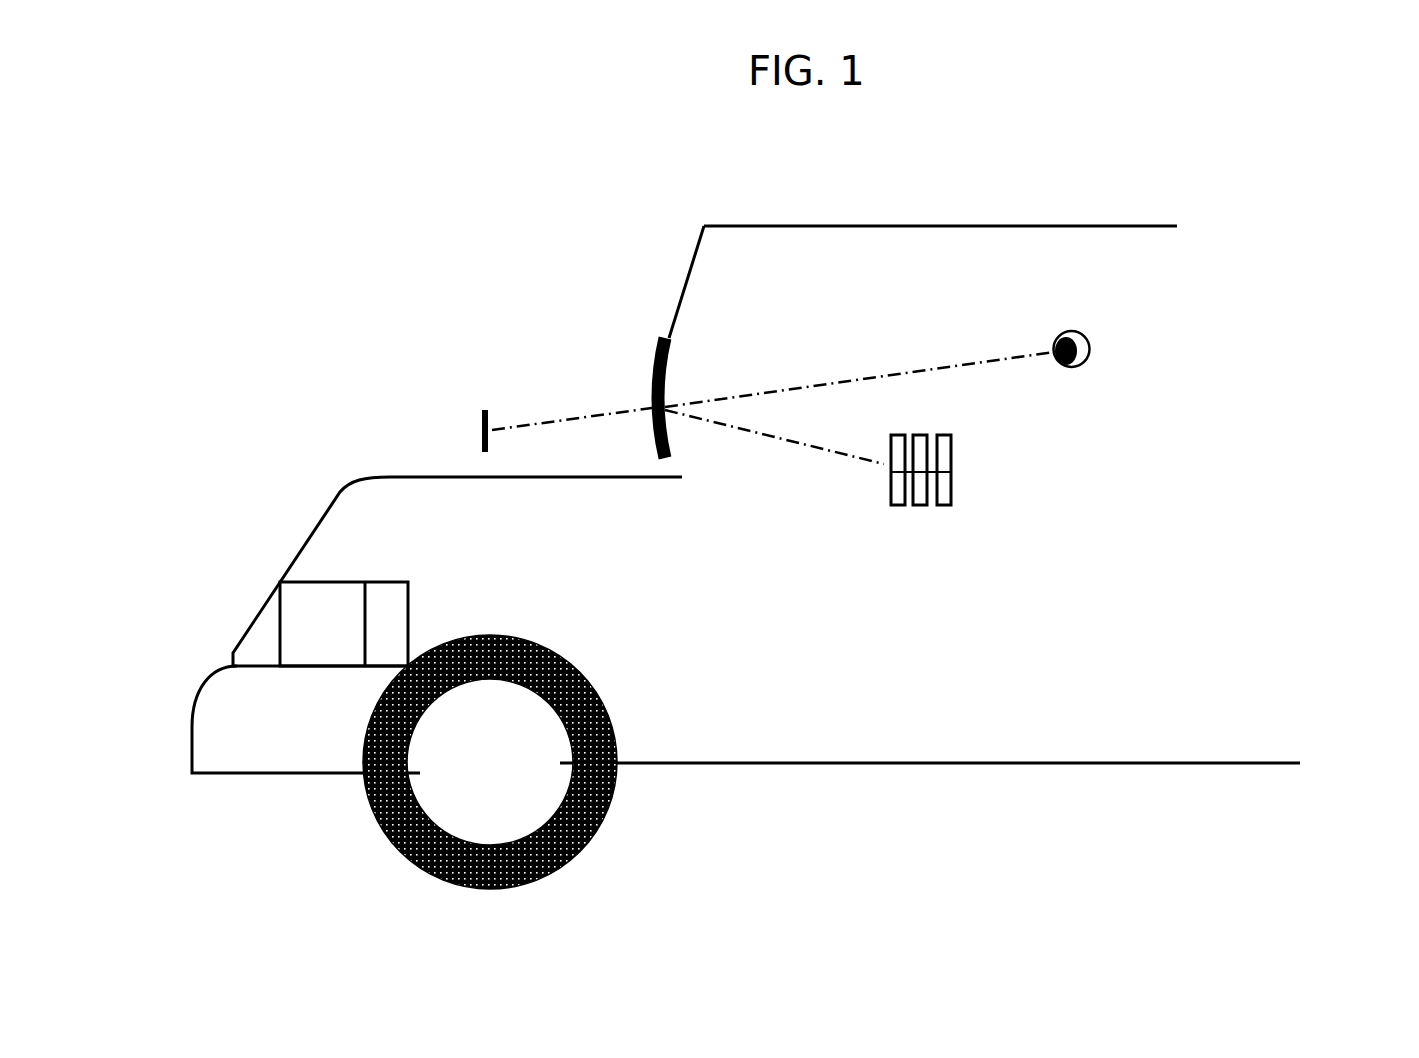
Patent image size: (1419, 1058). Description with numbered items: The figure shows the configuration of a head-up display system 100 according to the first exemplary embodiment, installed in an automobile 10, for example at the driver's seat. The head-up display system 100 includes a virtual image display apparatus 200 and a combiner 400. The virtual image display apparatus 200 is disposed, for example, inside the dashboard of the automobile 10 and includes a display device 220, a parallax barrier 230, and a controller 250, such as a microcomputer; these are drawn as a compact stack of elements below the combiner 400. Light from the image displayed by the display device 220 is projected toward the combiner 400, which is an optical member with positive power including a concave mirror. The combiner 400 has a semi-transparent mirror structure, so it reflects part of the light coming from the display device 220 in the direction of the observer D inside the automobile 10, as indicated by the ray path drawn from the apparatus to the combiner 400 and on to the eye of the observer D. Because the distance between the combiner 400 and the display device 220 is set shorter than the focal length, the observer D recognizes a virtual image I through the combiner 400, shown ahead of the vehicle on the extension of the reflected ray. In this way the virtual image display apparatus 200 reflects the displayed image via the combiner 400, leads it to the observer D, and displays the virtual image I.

The automobile 10 is at (882, 765).
The head-up display system 100 is at (1233, 255).
The virtual image display apparatus 200 is at (1029, 548).
The display device 220 is at (927, 505).
The parallax barrier 230 is at (897, 505).
The controller 250 is at (986, 470).
The combiner 400 is at (655, 363).
The observer D is at (1090, 337).
The virtual image I is at (483, 430).